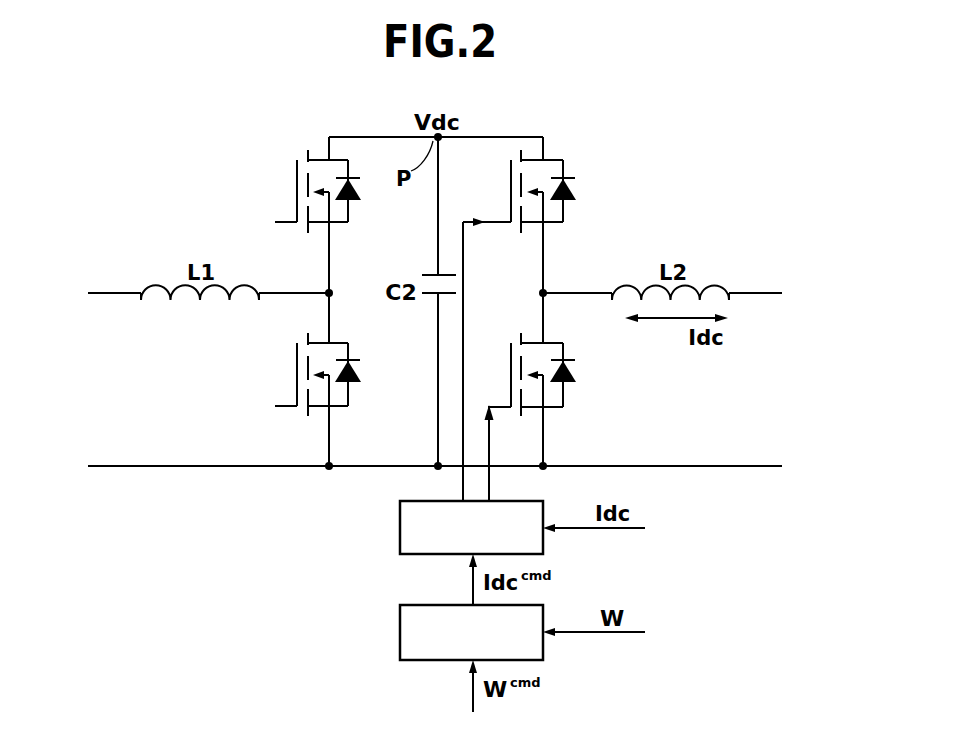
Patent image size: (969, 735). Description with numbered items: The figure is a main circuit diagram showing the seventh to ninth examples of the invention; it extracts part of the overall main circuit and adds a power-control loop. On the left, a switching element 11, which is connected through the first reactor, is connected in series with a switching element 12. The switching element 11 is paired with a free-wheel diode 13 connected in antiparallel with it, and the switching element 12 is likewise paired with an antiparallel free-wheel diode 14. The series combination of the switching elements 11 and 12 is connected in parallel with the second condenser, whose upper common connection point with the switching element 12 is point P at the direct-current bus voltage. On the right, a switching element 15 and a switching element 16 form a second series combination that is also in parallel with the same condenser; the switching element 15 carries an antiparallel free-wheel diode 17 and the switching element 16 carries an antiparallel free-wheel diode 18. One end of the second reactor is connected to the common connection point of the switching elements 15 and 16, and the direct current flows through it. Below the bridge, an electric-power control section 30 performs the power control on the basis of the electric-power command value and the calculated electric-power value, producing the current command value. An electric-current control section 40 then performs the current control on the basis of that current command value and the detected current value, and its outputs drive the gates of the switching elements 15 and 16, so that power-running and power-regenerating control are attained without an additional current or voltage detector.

The switching element 11 is at (297, 376).
The switching element 12 is at (297, 181).
The free-wheel diode 13 is at (362, 376).
The free-wheel diode 14 is at (362, 197).
The switching element 15 is at (506, 183).
The switching element 16 is at (507, 367).
The free-wheel diode 17 is at (575, 199).
The free-wheel diode 18 is at (575, 370).
The electric-power control section 30 is at (400, 632).
The electric-current control section 40 is at (400, 528).